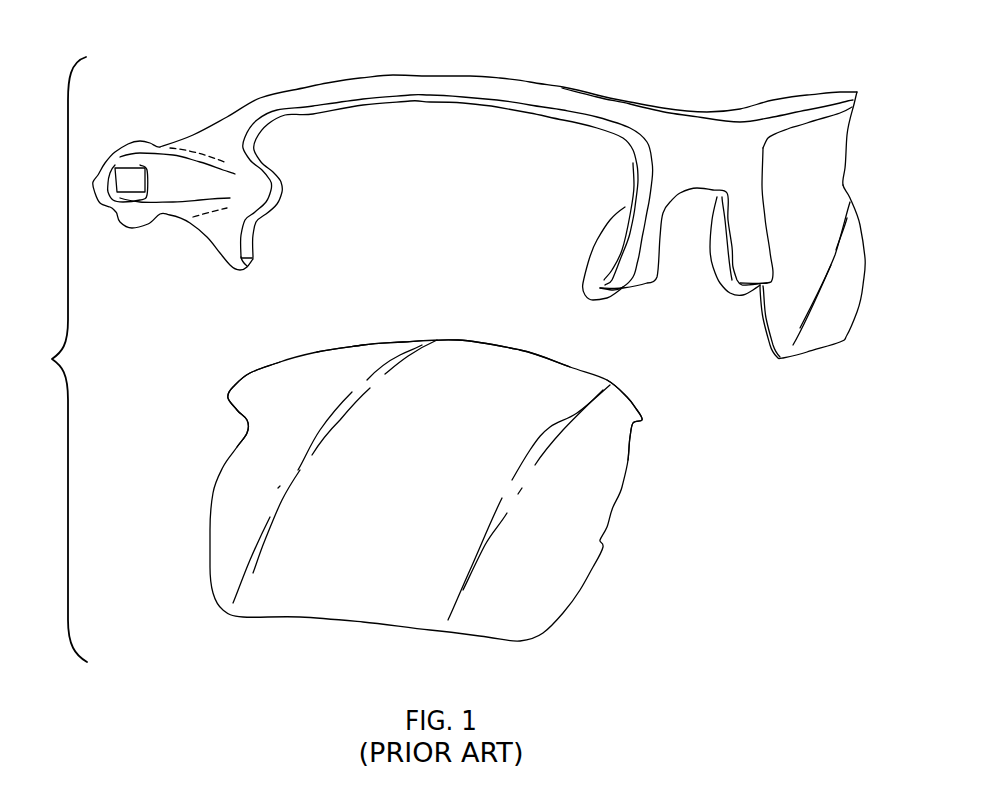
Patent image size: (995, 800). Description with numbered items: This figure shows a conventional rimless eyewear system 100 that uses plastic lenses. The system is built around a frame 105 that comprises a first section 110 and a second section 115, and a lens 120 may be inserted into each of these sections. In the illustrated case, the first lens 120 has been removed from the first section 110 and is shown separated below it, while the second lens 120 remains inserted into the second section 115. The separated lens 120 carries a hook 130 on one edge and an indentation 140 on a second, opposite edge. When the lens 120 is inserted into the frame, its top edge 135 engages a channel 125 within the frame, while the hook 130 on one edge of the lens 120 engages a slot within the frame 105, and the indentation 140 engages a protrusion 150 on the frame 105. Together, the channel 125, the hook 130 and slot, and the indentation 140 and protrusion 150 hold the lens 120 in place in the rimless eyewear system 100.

The rimless eyewear system 100 is at (51, 359).
The frame 105 is at (717, 118).
The first section 110 is at (557, 88).
The second section 115 is at (810, 102).
The lens 120 is at (820, 332).
The channel 125 is at (434, 102).
The hook 130 is at (642, 420).
The top edge 135 is at (464, 338).
The indentation 140 is at (228, 397).
The protrusion 150 is at (257, 183).